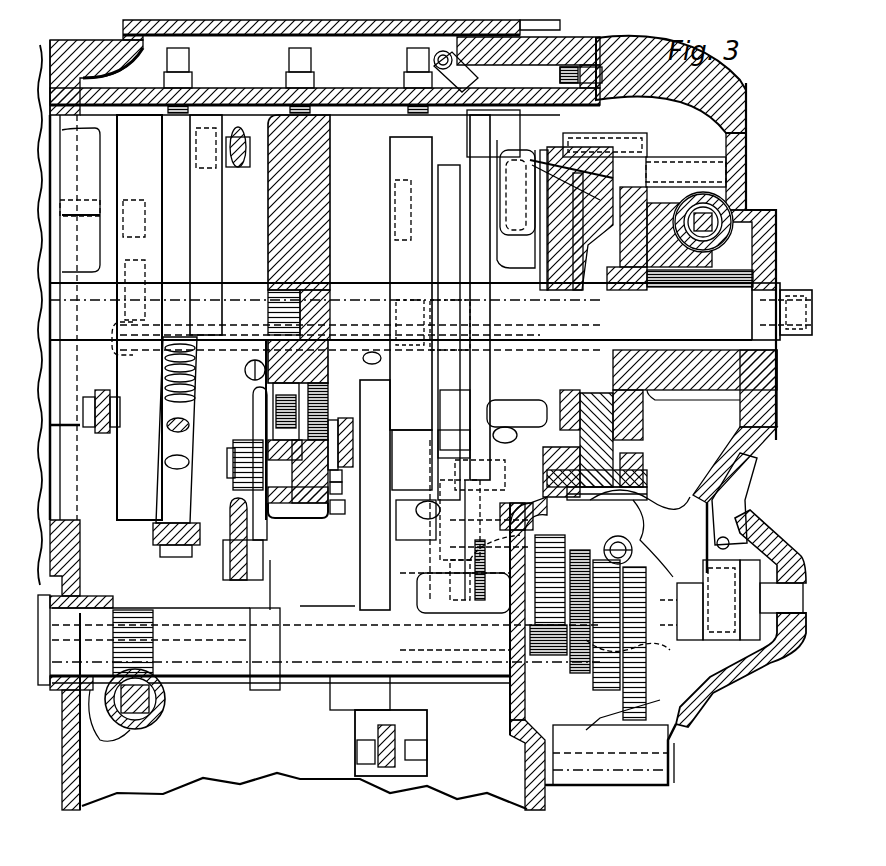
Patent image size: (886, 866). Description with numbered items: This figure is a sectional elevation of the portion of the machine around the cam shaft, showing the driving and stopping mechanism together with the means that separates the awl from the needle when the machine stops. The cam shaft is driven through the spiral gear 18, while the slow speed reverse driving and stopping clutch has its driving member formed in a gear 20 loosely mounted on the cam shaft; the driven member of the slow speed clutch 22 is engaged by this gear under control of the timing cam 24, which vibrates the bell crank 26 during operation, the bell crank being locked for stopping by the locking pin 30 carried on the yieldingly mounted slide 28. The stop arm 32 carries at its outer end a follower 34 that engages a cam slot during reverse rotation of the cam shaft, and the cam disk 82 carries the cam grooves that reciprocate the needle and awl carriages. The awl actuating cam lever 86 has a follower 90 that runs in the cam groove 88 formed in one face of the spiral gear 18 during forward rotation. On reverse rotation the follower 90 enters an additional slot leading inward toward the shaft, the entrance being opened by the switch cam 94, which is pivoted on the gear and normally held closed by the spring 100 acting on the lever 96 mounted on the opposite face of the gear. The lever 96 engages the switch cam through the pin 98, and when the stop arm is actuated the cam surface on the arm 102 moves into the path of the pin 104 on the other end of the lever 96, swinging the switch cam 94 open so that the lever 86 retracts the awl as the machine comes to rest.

The spiral gear 18 is at (331, 158).
The gear 20 is at (620, 137).
The driven member of the slow speed clutch 22 is at (606, 133).
The timing cam 24 is at (478, 272).
The bell crank 26 is at (514, 170).
The yieldingly mounted slide 28 is at (736, 240).
The locking pin 30 is at (693, 175).
The stop arm 32 is at (366, 542).
The follower 34 is at (392, 432).
The cam disk 82 is at (130, 118).
The awl actuating cam lever 86 is at (333, 468).
The cam groove 88 is at (336, 514).
The follower 90 is at (336, 482).
The switch cam 94 is at (338, 494).
The lever 96 is at (275, 412).
The pin 98 is at (336, 420).
The spring 100 is at (262, 430).
The arm 102 is at (272, 583).
The pin 104 is at (249, 365).